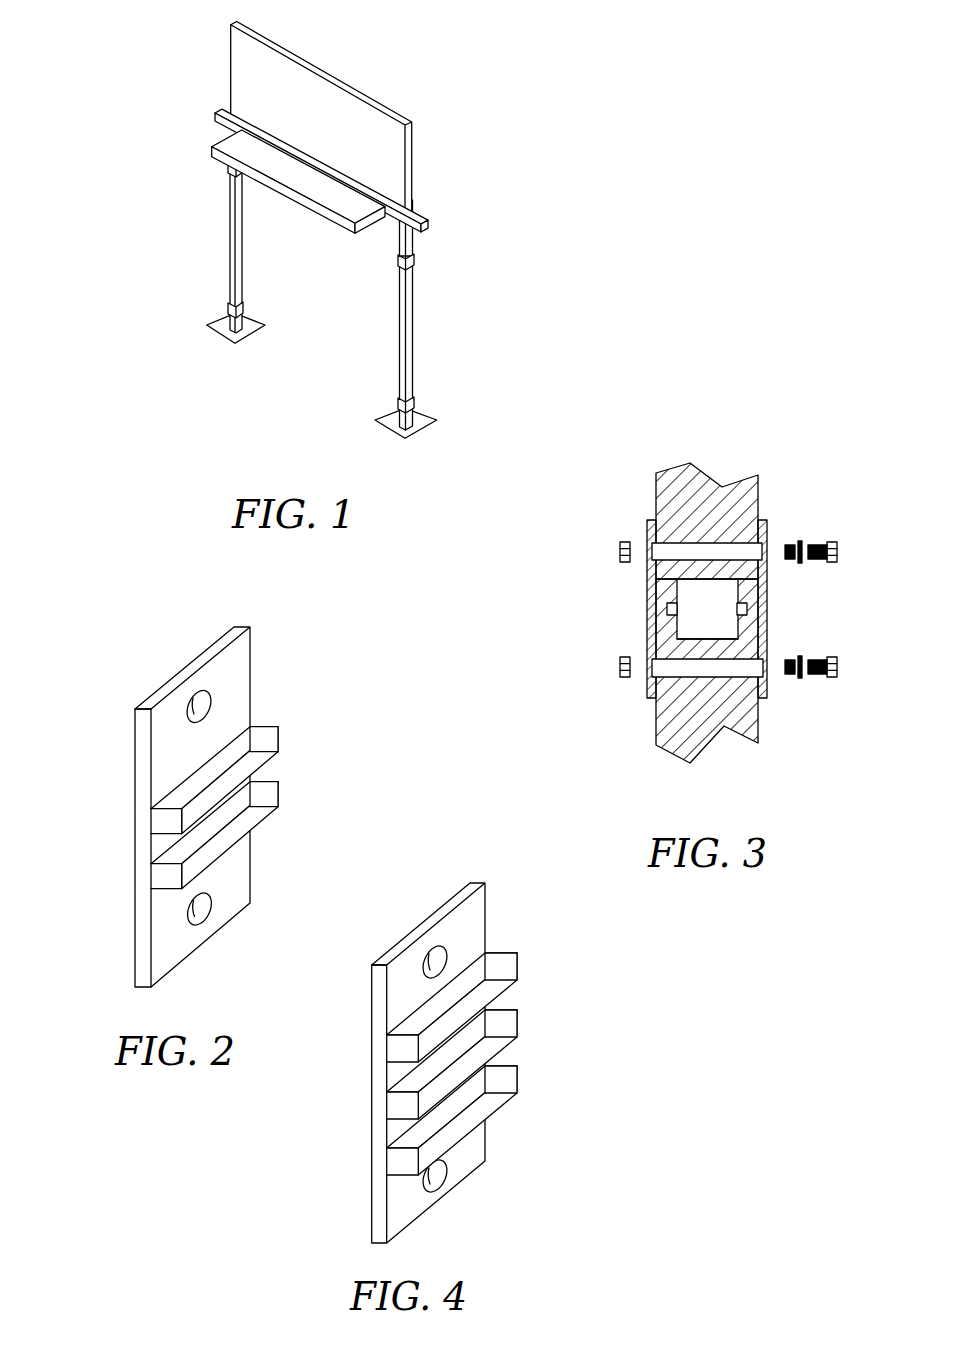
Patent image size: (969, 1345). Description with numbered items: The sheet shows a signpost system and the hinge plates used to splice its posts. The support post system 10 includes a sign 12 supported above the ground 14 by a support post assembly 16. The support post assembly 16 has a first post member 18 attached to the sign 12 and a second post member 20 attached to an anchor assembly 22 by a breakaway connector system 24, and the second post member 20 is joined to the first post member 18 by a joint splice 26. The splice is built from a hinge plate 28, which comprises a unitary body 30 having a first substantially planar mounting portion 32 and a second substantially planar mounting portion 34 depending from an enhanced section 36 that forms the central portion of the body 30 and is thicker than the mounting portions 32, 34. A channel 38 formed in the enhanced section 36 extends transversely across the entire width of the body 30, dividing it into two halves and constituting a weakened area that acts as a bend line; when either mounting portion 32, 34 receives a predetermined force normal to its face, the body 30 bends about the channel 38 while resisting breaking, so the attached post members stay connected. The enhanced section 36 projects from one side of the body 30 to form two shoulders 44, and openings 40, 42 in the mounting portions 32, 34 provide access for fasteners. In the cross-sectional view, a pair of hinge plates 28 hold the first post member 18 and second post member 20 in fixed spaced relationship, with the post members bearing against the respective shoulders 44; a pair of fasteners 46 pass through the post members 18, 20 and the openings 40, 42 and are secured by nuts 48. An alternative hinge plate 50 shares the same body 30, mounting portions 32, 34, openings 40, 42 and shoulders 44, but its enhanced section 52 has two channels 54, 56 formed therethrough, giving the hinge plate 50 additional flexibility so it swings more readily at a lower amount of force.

In FIG. 1, the support post system 10 is at (307, 230).
In FIG. 1, the sign 12 is at (393, 108).
In FIG. 1, the ground 14 is at (278, 398).
In FIG. 1, the support post assembly 16 is at (433, 319).
In FIG. 1, the first post member 18 is at (398, 241).
In FIG. 3, the first post member 18 is at (759, 490).
In FIG. 1, the second post member 20 is at (398, 318).
In FIG. 3, the second post member 20 is at (759, 723).
In FIG. 1, the anchor assembly 22 is at (425, 407).
In FIG. 1, the breakaway connector system 24 is at (397, 404).
In FIG. 1, the joint splice 26 is at (421, 262).
In FIG. 2, the hinge plate 28 is at (206, 779).
In FIG. 3, the hinge plate 28 is at (636, 612).
In FIG. 2, the unitary body 30 is at (132, 845).
In FIG. 4, the unitary body 30 is at (370, 1073).
In FIG. 2, the first substantially planar mounting portion 32 is at (240, 670).
In FIG. 2, the second substantially planar mounting portion 34 is at (240, 865).
In FIG. 2, the enhanced section 36 is at (167, 875).
In FIG. 3, the enhanced section 36 is at (670, 641).
In FIG. 2, the channel 38 is at (270, 770).
In FIG. 3, the channel 38 is at (722, 609).
In FIG. 2, the opening 40 is at (212, 700).
In FIG. 3, the opening 40 is at (642, 542).
In FIG. 4, the opening 40 is at (442, 958).
In FIG. 2, the opening 42 is at (208, 907).
In FIG. 3, the opening 42 is at (643, 672).
In FIG. 4, the opening 42 is at (440, 1172).
In FIG. 2, the shoulders 44 is at (260, 730).
In FIG. 4, the shoulders 44 is at (493, 963).
In FIG. 3, the fasteners 46 is at (840, 552).
In FIG. 3, the nuts 48 is at (618, 552).
In FIG. 4, the hinge plate 50 is at (456, 1037).
In FIG. 4, the enhanced section 52 is at (403, 1107).
In FIG. 4, the channel 54 is at (513, 997).
In FIG. 4, the channel 56 is at (513, 1052).